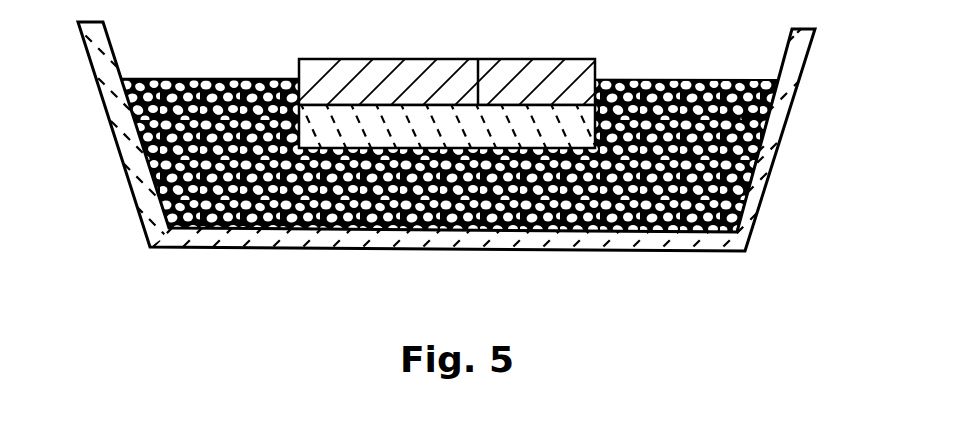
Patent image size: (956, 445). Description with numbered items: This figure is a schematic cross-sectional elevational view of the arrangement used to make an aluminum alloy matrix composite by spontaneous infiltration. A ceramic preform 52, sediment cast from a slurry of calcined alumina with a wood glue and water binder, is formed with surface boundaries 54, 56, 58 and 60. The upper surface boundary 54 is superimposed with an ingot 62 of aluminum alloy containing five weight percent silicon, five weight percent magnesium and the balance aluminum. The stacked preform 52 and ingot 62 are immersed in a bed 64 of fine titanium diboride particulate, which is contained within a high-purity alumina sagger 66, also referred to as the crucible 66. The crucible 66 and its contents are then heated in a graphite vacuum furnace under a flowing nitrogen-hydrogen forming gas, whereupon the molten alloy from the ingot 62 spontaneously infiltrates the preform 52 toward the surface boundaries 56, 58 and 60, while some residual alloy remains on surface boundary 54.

The preform 52 is at (358, 246).
The surface boundary 54 is at (478, 60).
The surface boundary 56 is at (623, 80).
The surface boundary 58 is at (545, 230).
The surface boundary 60 is at (258, 78).
The ingot 62 is at (390, 72).
The bed 64 is at (733, 118).
The sagger 66 is at (118, 130).